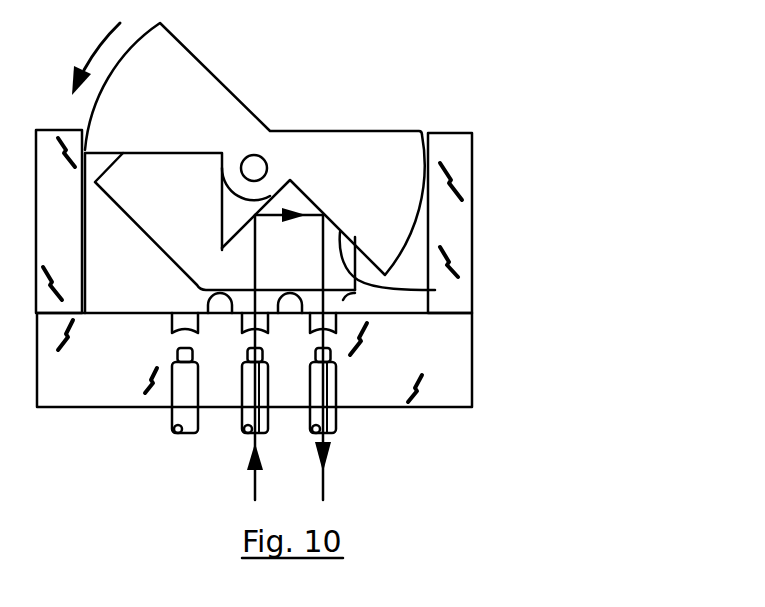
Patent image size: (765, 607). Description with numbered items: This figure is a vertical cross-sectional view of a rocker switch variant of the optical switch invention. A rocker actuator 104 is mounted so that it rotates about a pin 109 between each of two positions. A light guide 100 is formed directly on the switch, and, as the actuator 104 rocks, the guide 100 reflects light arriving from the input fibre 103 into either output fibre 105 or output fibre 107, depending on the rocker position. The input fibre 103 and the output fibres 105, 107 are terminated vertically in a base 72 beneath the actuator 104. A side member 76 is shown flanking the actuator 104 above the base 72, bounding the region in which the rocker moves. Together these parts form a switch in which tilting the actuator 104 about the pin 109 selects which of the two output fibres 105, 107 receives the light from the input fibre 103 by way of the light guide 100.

The base 72 is at (445, 375).
The side post 76 is at (452, 227).
The light guide 100 is at (435, 290).
The input fibre 103 is at (240, 423).
The actuator 104 is at (205, 65).
The output fibre 105 is at (333, 420).
The output fibre 107 is at (173, 413).
The pin 109 is at (263, 156).